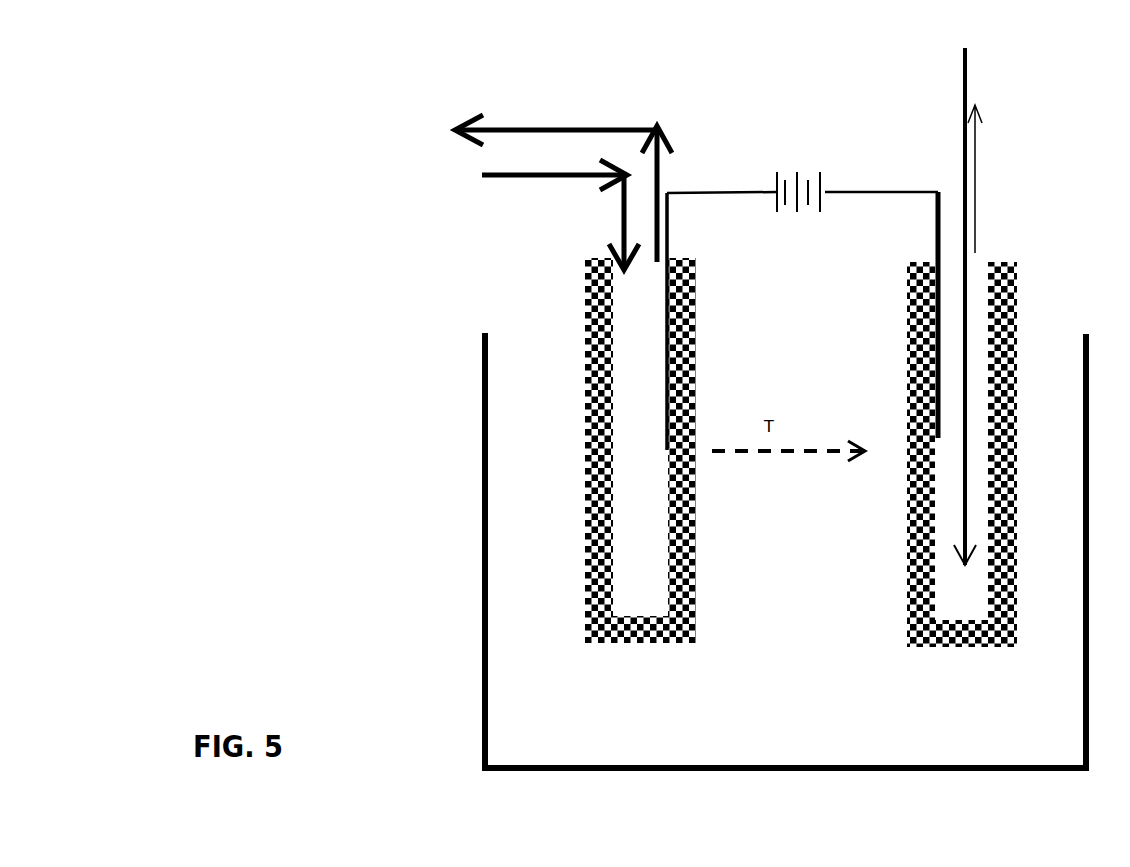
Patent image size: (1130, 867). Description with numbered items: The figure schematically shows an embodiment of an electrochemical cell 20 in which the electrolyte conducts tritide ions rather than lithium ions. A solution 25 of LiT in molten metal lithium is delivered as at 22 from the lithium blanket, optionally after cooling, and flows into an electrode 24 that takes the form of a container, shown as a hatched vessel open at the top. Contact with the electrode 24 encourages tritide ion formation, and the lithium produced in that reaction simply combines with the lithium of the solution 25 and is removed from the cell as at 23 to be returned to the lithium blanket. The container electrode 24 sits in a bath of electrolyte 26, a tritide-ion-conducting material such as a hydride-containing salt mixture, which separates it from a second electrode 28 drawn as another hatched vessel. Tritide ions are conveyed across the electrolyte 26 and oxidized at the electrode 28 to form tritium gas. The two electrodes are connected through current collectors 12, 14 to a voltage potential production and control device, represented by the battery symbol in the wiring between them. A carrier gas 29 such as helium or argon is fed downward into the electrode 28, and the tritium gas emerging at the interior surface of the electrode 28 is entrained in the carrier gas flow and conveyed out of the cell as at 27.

The electrochemical cell 20 is at (420, 204).
The current collector 12 is at (690, 345).
The current collector 14 is at (910, 352).
The solution delivery 22 is at (552, 178).
The lithium removal 23 is at (548, 126).
The electrode 24 is at (585, 372).
The solution 25 is at (637, 509).
The electrolyte 26 is at (785, 562).
The tritium removal 27 is at (978, 186).
The electrode 28 is at (1010, 363).
The carrier gas 29 is at (967, 90).